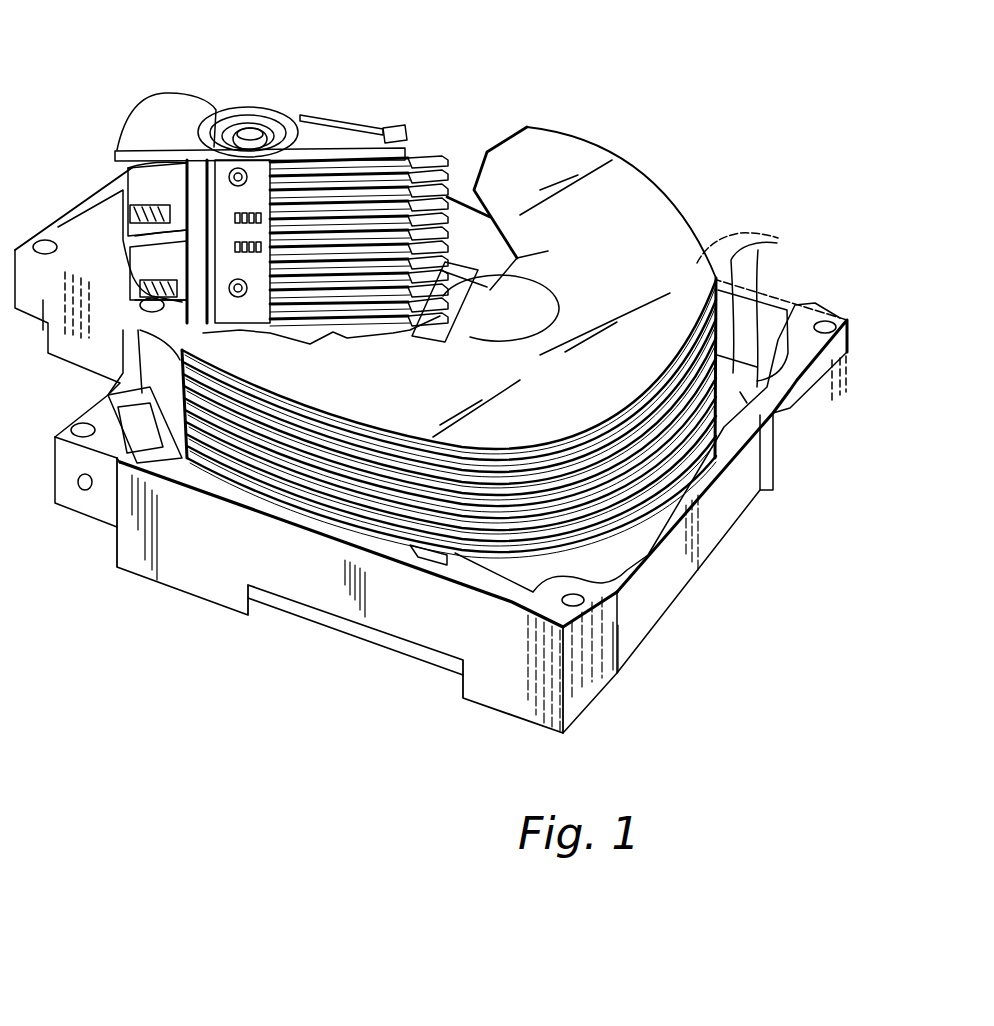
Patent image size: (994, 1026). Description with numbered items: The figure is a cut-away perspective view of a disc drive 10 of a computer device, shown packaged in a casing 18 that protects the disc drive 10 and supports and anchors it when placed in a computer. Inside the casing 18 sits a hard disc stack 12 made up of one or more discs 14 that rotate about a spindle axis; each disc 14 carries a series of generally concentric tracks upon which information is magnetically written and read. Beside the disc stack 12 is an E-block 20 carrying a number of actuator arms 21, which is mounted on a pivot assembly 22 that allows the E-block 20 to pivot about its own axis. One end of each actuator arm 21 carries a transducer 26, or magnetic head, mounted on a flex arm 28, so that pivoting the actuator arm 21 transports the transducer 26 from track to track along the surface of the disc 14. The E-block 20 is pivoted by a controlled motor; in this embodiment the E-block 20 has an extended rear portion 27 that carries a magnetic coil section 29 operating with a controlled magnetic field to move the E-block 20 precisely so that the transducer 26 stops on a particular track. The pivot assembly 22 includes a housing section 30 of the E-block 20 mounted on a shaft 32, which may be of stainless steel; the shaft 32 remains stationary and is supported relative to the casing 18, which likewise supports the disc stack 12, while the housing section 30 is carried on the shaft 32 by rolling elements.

The disc drive 10 is at (114, 76).
The hard disc stack 12 is at (634, 165).
The disc 14 is at (750, 378).
The casing 18 is at (147, 577).
The E-block 20 is at (428, 134).
The actuator arm 21 is at (333, 140).
The pivot assembly 22 is at (299, 106).
The transducer 26 is at (548, 251).
The extended rear portion 27 is at (137, 100).
The flex arm 28 is at (411, 338).
The magnetic coil section 29 is at (143, 180).
The housing section 30 is at (200, 118).
The shaft 32 is at (245, 127).